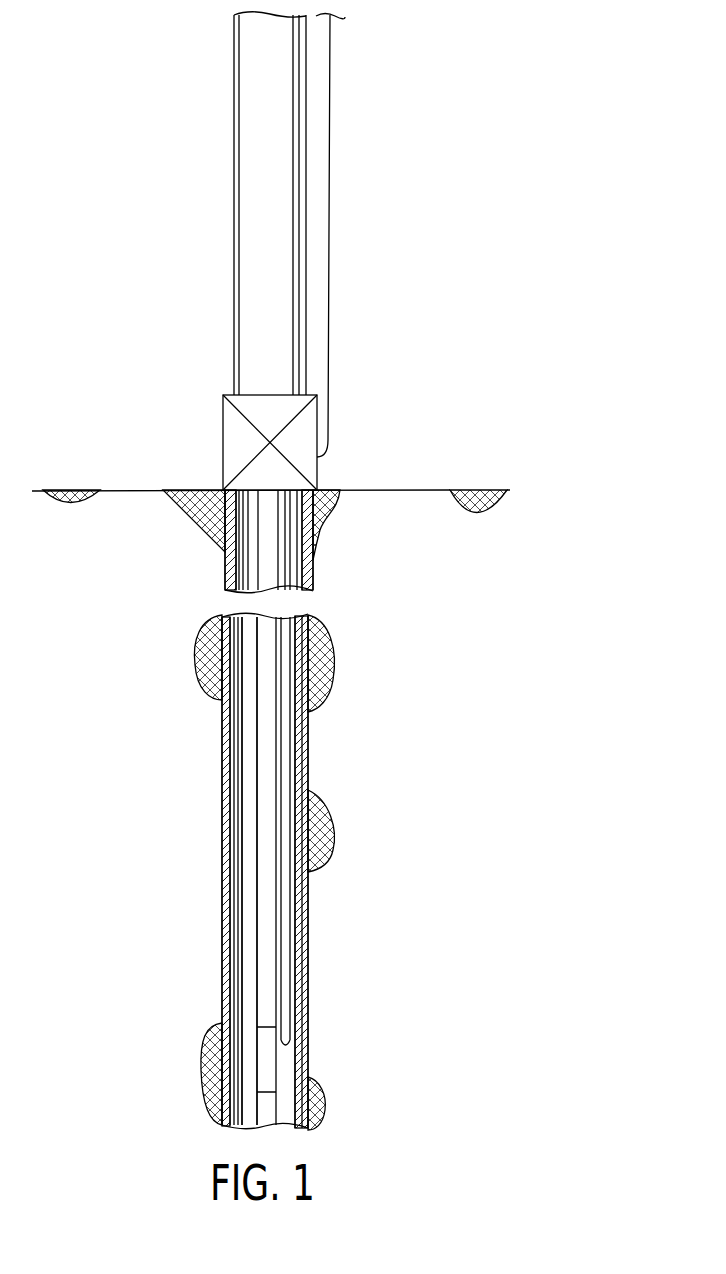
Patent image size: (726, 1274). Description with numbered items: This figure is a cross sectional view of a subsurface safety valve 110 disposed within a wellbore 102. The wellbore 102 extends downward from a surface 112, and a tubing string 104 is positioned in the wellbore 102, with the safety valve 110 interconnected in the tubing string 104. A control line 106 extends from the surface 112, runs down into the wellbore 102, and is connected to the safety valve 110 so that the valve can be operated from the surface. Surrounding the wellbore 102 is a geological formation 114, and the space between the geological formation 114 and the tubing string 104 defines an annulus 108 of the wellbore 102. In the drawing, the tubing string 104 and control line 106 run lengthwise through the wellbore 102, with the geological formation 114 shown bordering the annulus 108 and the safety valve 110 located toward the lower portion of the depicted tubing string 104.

The wellbore 102 is at (374, 765).
The tubing string 104 is at (257, 773).
The control line 106 is at (283, 920).
The annulus 108 is at (250, 940).
The subsurface safety valve 110 is at (278, 1073).
The surface 112 is at (392, 490).
The geological formation 114 is at (198, 655).